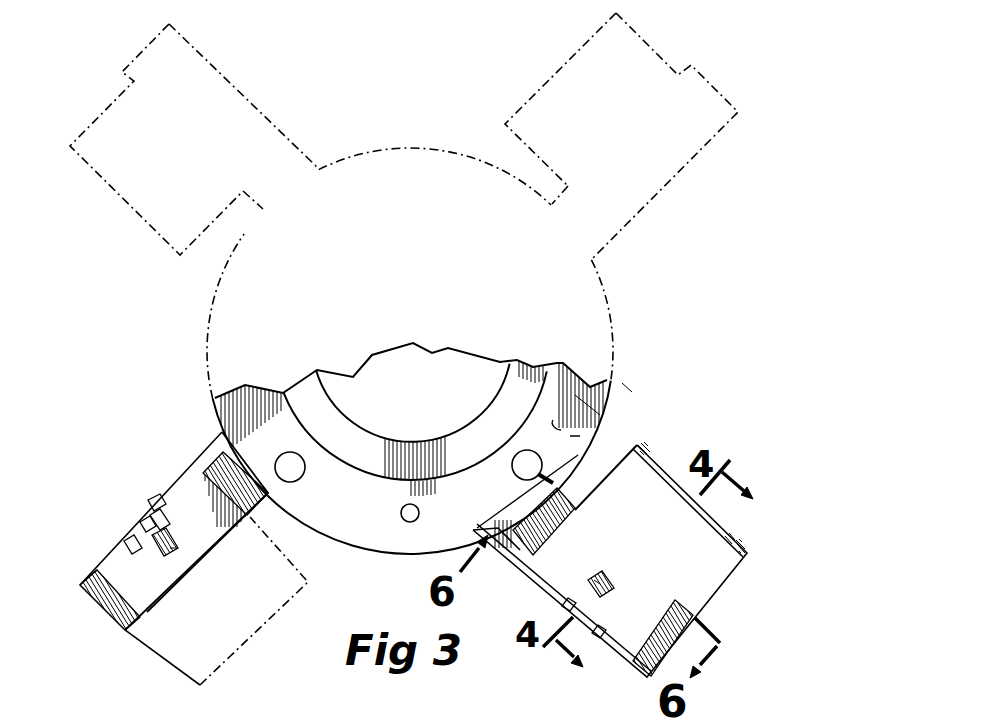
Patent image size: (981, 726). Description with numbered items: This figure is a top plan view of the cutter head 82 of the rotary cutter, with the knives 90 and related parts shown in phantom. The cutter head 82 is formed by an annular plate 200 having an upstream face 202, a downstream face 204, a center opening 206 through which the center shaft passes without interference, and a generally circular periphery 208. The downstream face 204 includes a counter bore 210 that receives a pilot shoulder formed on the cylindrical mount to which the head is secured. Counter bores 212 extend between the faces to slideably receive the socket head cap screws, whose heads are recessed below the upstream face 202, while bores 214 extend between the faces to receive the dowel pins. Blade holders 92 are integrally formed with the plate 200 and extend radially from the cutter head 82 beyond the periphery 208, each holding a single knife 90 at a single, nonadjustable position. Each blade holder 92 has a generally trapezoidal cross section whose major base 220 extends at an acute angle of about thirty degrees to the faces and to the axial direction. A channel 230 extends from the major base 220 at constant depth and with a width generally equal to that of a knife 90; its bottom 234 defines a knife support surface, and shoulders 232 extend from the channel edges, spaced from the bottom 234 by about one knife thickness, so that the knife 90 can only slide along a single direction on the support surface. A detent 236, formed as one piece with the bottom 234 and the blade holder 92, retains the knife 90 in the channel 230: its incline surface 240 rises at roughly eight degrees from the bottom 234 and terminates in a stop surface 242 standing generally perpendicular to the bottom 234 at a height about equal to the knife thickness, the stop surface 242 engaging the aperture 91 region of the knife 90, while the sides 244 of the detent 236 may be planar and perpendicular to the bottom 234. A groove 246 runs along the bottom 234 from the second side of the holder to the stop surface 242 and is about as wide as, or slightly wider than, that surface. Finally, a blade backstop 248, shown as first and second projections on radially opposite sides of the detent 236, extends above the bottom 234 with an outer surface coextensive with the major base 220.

The cutter head 82 is at (164, 606).
The knife 90 is at (108, 188).
The aperture 91 is at (596, 578).
The blade holder 92 is at (252, 95).
The annular plate 200 is at (194, 392).
The upstream face 202 is at (553, 430).
The downstream face 204 is at (585, 402).
The center opening 206 is at (360, 420).
The circular periphery 208 is at (602, 385).
The counter bore 210 is at (498, 380).
The counter bores 212 is at (297, 482).
The bores 214 is at (408, 522).
The major base 220 is at (118, 600).
The channel 230 is at (118, 553).
The shoulders 232 is at (580, 514).
The bottom 234 is at (110, 576).
The detent 236 is at (199, 542).
The incline surface 240 is at (162, 556).
The stop surface 242 is at (152, 503).
The sides 244 is at (157, 522).
The groove 246 is at (147, 527).
The blade backstop 248 is at (157, 507).